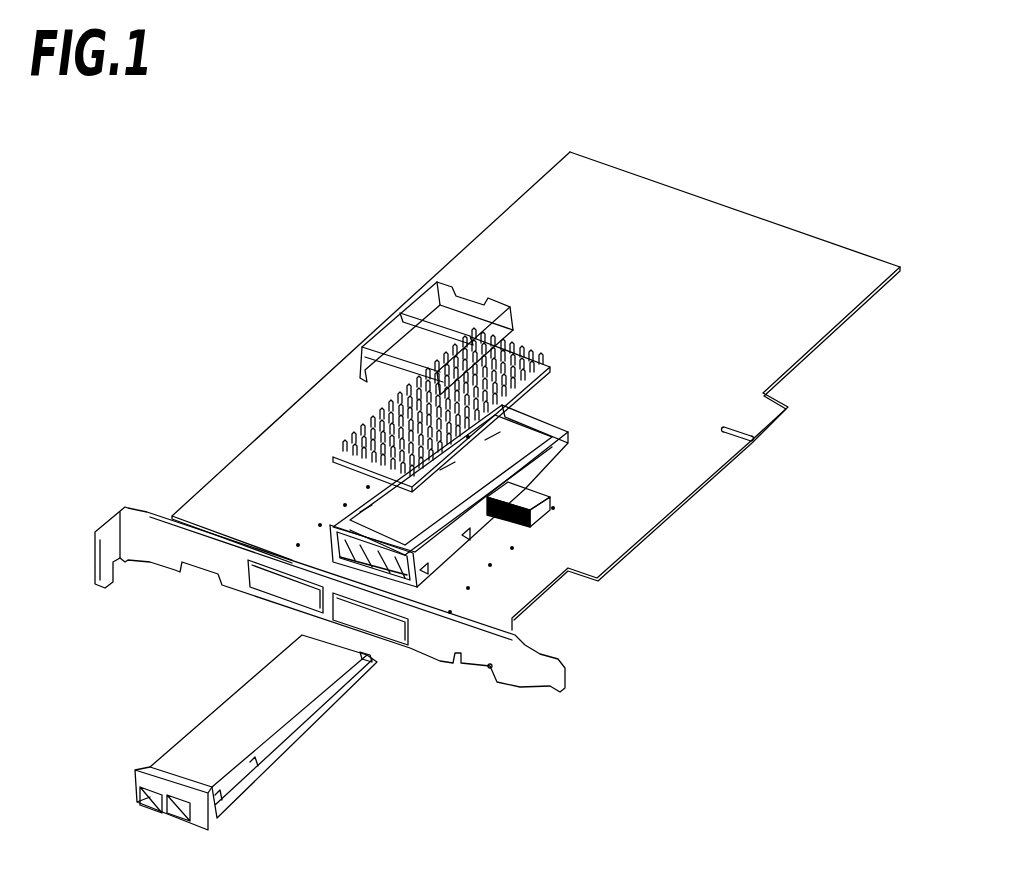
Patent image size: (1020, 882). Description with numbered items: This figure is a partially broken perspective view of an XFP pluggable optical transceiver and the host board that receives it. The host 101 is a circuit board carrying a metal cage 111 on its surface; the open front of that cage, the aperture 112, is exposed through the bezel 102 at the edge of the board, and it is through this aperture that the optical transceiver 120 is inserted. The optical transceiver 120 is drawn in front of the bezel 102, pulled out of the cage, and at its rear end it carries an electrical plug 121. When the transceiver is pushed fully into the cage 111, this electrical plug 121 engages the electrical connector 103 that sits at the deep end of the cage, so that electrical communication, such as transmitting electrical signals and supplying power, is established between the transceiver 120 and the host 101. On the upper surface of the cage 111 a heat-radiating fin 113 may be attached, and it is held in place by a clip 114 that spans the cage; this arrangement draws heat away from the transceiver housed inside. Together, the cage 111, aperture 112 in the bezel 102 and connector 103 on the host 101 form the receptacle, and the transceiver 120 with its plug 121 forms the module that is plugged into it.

The host 101 is at (578, 202).
The bezel 102 is at (507, 662).
The electrical connector 103 is at (523, 508).
The metal cage 111 is at (367, 503).
The aperture 112 is at (343, 550).
The heat-radiating fin 113 is at (385, 412).
The clip 114 is at (425, 308).
The optical transceiver 120 is at (297, 717).
The electrical plug 121 is at (377, 660).